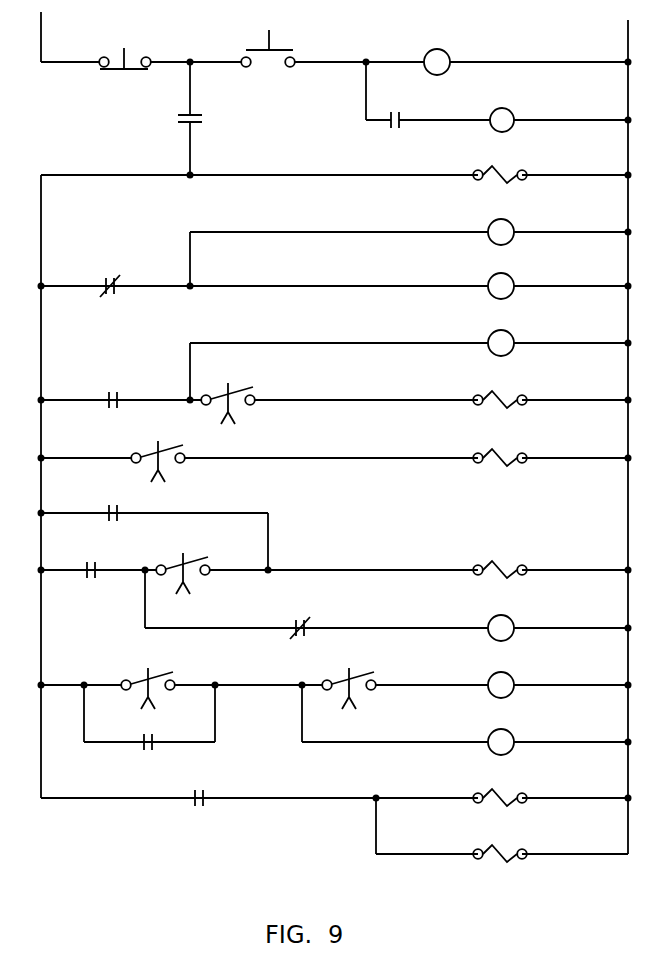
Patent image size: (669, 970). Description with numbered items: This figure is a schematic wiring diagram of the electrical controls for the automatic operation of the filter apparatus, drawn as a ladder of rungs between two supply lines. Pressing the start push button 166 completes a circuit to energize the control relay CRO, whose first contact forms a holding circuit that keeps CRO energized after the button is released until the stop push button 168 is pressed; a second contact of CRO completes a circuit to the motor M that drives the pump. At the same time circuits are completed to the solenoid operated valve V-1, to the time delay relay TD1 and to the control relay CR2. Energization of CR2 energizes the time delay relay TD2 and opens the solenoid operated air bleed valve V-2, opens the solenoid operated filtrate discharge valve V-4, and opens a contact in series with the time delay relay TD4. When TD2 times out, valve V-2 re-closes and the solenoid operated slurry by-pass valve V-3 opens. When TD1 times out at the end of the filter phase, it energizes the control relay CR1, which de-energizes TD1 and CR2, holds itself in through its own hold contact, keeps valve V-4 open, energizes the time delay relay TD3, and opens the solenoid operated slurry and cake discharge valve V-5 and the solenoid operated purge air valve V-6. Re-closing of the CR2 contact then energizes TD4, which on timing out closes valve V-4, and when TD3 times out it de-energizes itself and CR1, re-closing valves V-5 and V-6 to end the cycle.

The start push button 166 is at (289, 47).
The stop push button 168 is at (103, 67).
The control relay CRO is at (438, 51).
The motor M is at (502, 120).
The solenoid operated valve V-1 is at (500, 162).
The solenoid operated air bleed valve V-2 is at (500, 387).
The solenoid operated slurry by-pass valve V-3 is at (500, 446).
The solenoid operated filtrate discharge valve V-4 is at (500, 558).
The solenoid operated slurry and cake discharge valve V-5 is at (500, 785).
The solenoid operated purge air valve V-6 is at (500, 841).
The time delay relay TD1 is at (495, 221).
The time delay relay TD2 is at (505, 333).
The time delay relay TD3 is at (497, 730).
The time delay relay TD4 is at (495, 615).
The control relay CR1 is at (498, 674).
The control relay CR2 is at (498, 276).